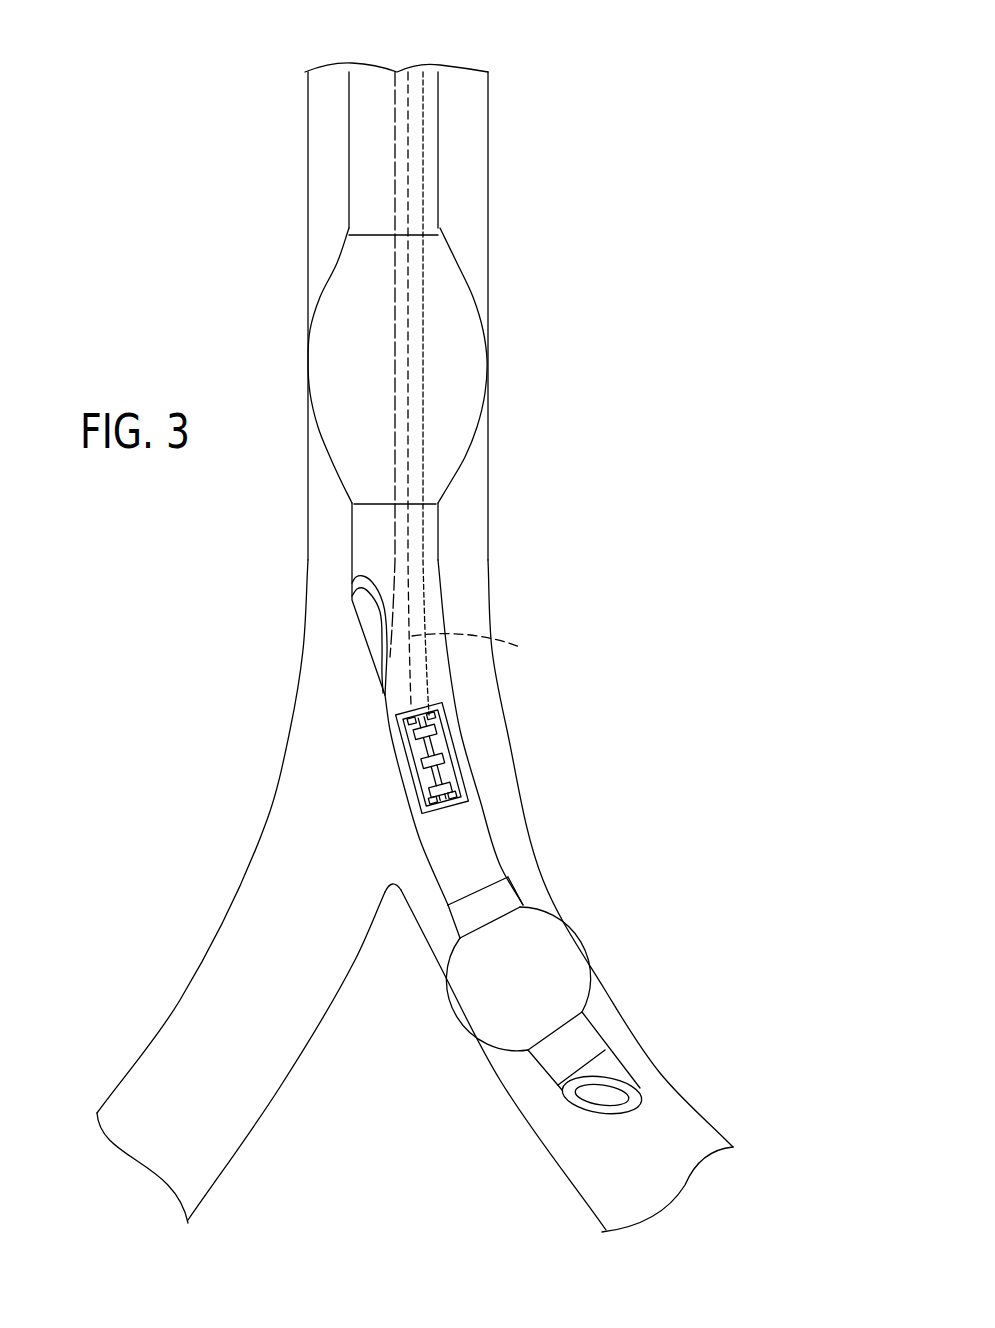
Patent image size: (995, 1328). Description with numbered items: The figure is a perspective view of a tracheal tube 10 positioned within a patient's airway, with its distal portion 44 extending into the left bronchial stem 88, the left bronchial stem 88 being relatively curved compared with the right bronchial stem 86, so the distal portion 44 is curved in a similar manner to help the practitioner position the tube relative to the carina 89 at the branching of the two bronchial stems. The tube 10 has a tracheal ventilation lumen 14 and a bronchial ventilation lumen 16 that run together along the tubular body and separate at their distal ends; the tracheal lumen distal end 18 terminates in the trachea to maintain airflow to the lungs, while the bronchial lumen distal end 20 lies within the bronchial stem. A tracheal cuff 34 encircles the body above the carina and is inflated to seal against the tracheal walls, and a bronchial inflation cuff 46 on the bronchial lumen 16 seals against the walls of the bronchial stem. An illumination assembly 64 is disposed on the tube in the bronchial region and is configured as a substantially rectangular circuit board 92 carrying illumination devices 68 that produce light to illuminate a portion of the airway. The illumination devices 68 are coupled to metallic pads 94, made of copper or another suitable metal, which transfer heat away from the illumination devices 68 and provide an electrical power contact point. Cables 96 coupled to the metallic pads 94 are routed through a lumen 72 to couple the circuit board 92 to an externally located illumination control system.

The tracheal tube 10 is at (261, 61).
The tracheal ventilation lumen 14 is at (377, 62).
The bronchial ventilation lumen 16 is at (430, 62).
The tracheal lumen distal end 18 is at (323, 627).
The bronchial lumen distal end 20 is at (609, 1136).
The tracheal cuff 34 is at (330, 460).
The distal portion 44 is at (433, 918).
The bronchial inflation cuff 46 is at (493, 1047).
The illumination assembly 64 is at (477, 737).
The illumination devices 68 is at (430, 793).
The lumen 72 is at (483, 649).
The right bronchial stem 86 is at (272, 873).
The left bronchial stem 88 is at (518, 857).
The carina 89 is at (385, 882).
The circuit board 92 is at (457, 757).
The metallic pads 94 is at (460, 805).
The cables 96 is at (413, 712).